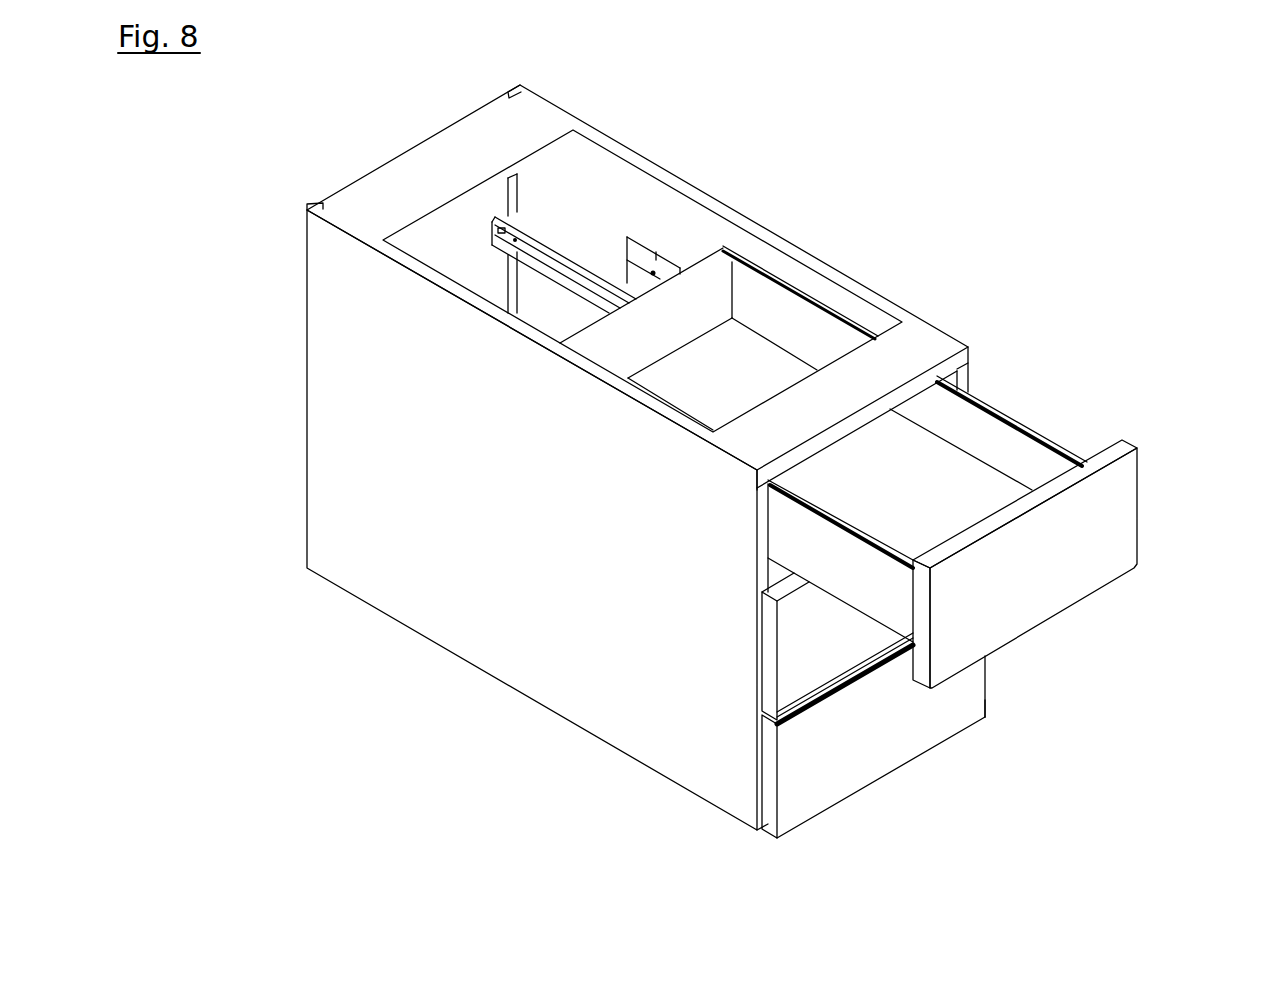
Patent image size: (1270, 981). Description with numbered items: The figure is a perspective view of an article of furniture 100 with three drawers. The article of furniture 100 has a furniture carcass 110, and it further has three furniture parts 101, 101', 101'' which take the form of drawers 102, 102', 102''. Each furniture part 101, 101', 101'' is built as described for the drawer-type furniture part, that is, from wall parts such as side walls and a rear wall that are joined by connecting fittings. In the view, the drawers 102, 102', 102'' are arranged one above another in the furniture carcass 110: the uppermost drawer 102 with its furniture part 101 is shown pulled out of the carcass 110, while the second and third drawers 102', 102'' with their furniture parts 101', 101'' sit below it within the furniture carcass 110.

The article of furniture 100 is at (882, 247).
The furniture part 101 is at (1082, 564).
The drawer 102 is at (871, 444).
The furniture carcass 110 is at (412, 573).
The furniture part 101' is at (668, 653).
The drawer 102' is at (710, 733).
The furniture part 101'' is at (965, 741).
The drawer 102'' is at (993, 747).